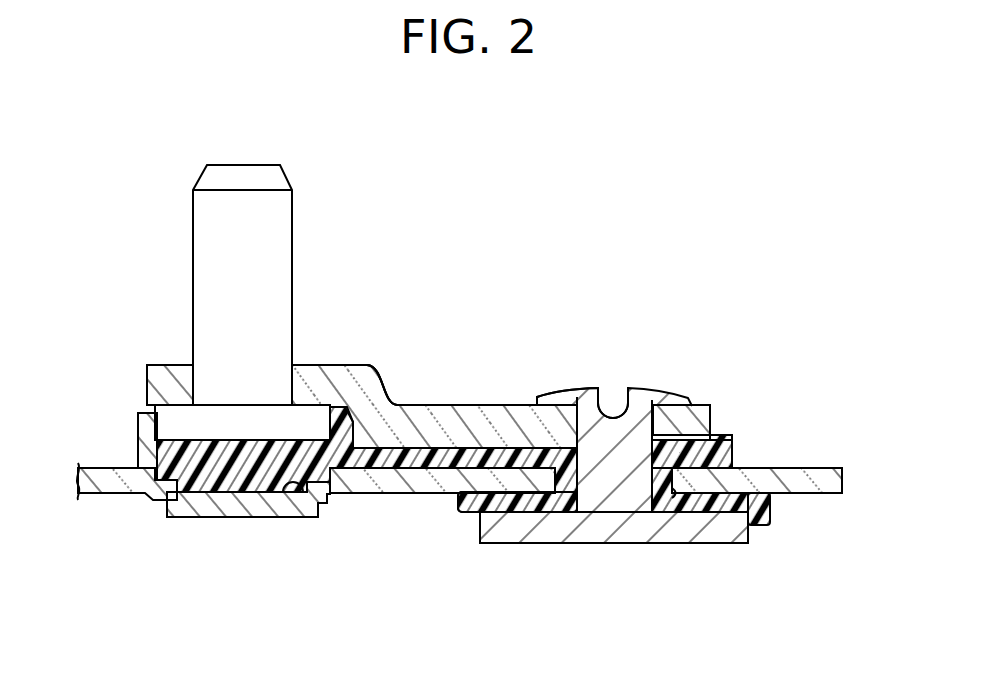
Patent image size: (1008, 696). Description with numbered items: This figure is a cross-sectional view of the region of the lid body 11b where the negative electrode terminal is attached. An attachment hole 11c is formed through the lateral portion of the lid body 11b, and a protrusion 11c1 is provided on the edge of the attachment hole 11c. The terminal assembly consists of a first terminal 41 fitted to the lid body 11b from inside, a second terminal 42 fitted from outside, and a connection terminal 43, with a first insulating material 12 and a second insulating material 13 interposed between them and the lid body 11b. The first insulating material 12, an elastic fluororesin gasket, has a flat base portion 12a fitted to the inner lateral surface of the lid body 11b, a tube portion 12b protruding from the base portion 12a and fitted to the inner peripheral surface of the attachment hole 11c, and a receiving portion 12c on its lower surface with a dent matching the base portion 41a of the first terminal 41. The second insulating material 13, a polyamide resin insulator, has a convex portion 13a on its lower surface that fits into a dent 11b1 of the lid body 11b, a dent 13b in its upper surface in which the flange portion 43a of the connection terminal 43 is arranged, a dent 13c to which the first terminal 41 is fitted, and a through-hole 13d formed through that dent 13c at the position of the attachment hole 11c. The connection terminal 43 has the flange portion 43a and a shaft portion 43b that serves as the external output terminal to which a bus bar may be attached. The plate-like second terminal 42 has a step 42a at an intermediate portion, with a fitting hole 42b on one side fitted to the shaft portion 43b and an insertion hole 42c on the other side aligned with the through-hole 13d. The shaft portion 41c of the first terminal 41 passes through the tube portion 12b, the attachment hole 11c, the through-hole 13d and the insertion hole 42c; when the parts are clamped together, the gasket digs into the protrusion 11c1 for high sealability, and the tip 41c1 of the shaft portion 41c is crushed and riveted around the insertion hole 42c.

The lid body 11b is at (833, 467).
The dent 11b1 is at (293, 494).
The attachment hole 11c is at (650, 488).
The protrusion 11c1 is at (669, 498).
The first insulating material 12 is at (458, 507).
The base portion 12a is at (771, 499).
The tube portion 12b is at (557, 507).
The receiving portion 12c is at (493, 517).
The second insulating material 13 is at (137, 443).
The convex portion 13a is at (222, 495).
The dent 13b is at (147, 397).
The dent 13c is at (712, 413).
The through-hole 13d is at (578, 458).
The first terminal 41 is at (752, 542).
The base portion 41a is at (713, 546).
The shaft portion 41c is at (660, 420).
The tip 41c1 is at (647, 392).
The second terminal 42 is at (447, 401).
The step 42a is at (384, 371).
The fitting hole 42b is at (345, 366).
The insertion hole 42c is at (582, 425).
The connection terminal 43 is at (263, 163).
The flange portion 43a is at (212, 405).
The shaft portion 43b is at (193, 232).